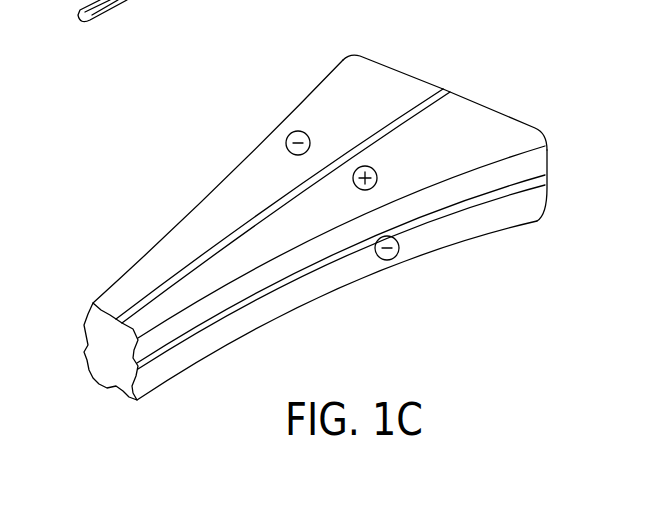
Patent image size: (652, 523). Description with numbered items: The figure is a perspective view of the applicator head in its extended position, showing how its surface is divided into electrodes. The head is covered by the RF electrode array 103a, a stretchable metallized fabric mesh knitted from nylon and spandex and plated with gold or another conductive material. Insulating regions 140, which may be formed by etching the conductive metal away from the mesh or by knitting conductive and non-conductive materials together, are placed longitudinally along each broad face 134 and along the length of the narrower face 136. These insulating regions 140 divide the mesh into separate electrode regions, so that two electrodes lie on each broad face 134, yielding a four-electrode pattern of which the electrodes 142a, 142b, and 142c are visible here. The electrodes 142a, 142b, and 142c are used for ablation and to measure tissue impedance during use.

The RF electrode array 103a is at (345, 57).
The broad face 134 is at (463, 152).
The face 136 is at (527, 205).
The insulating regions 140 is at (157, 285).
The electrode 142a is at (400, 82).
The electrode 142b is at (497, 127).
The electrode 142c is at (438, 230).